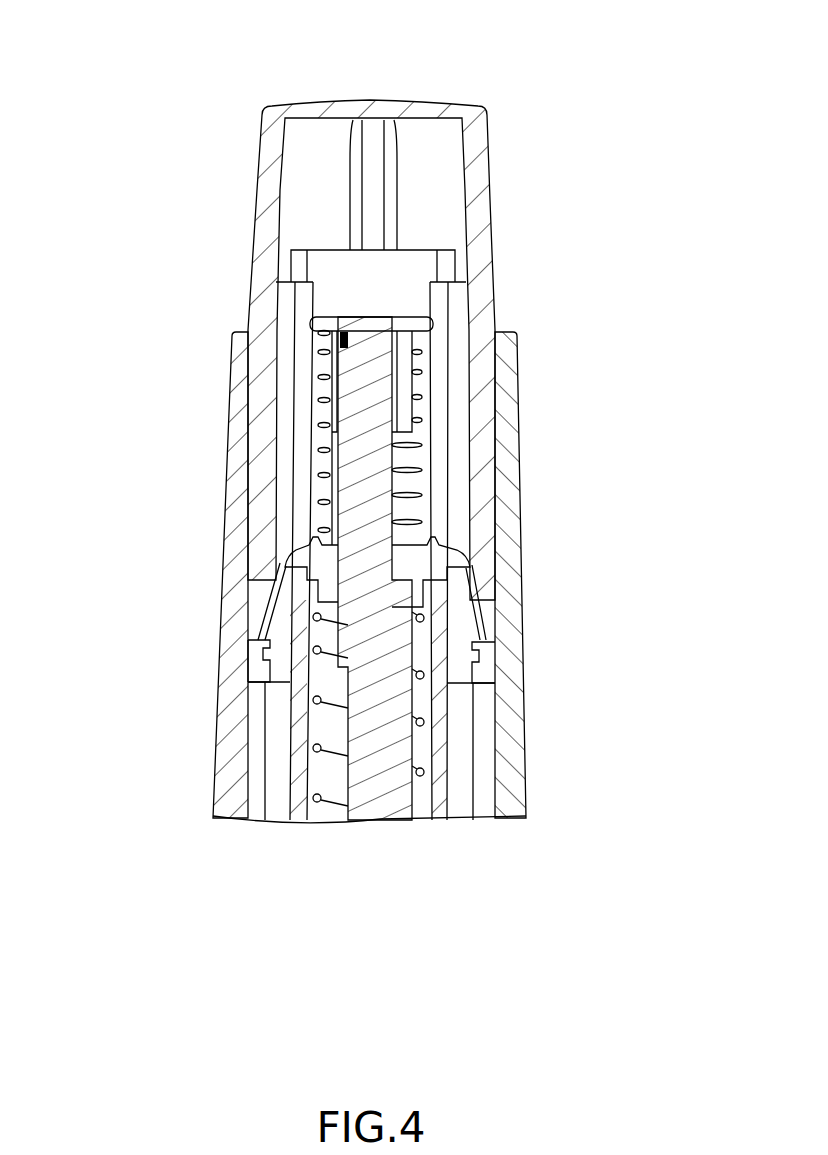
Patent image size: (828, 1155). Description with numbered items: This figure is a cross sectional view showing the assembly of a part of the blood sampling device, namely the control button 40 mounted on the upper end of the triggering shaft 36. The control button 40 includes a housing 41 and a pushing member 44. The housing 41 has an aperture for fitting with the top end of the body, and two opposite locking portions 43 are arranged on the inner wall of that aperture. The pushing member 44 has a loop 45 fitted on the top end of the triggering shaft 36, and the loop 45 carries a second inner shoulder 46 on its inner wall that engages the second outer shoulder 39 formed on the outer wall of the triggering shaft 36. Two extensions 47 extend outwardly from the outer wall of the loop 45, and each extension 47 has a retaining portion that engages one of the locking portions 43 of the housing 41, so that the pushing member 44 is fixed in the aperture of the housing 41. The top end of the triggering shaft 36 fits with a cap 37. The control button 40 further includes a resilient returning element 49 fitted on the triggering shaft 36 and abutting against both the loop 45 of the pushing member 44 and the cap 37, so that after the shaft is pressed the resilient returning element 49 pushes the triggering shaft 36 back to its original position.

The triggering shaft 36 is at (383, 778).
The cap 37 is at (430, 323).
The second outer shoulder 39 is at (335, 668).
The control button 40 is at (261, 96).
The housing 41 is at (482, 183).
The locking portion 43 is at (263, 652).
The pushing member 44 is at (284, 543).
The loop 45 is at (435, 562).
The second inner shoulder 46 is at (253, 620).
The extension 47 is at (277, 588).
The resilient returning element 49 is at (420, 353).